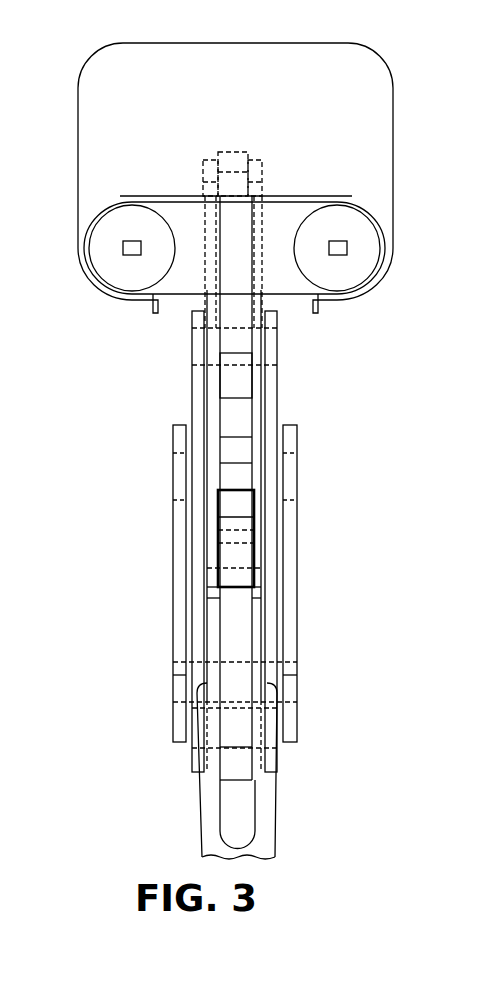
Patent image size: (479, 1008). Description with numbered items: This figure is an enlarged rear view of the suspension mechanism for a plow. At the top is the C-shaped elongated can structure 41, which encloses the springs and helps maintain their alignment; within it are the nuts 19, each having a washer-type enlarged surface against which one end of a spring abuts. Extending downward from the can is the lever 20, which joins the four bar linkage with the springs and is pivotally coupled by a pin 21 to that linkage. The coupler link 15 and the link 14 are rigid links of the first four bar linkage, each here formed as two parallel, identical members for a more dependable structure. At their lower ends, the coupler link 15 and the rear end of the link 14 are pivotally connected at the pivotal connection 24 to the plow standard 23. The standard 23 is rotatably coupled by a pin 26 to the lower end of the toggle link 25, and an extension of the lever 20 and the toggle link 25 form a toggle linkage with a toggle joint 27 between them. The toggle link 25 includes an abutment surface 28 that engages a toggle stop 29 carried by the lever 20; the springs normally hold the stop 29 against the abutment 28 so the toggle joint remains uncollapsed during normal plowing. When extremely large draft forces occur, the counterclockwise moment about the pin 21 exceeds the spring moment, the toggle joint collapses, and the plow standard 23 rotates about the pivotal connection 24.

The can structure 41 is at (391, 113).
The nut 19 is at (160, 266).
The lever 20 is at (212, 301).
The pin 21 is at (232, 328).
The coupler link 15 is at (191, 379).
The link 14 is at (173, 582).
The toggle stop 29 is at (243, 476).
The abutment surface 28 is at (225, 508).
The toggle joint 27 is at (232, 530).
The toggle link 25 is at (245, 618).
The pivotal connection 24 is at (238, 662).
The pin 26 is at (230, 708).
The plow standard 23 is at (272, 803).